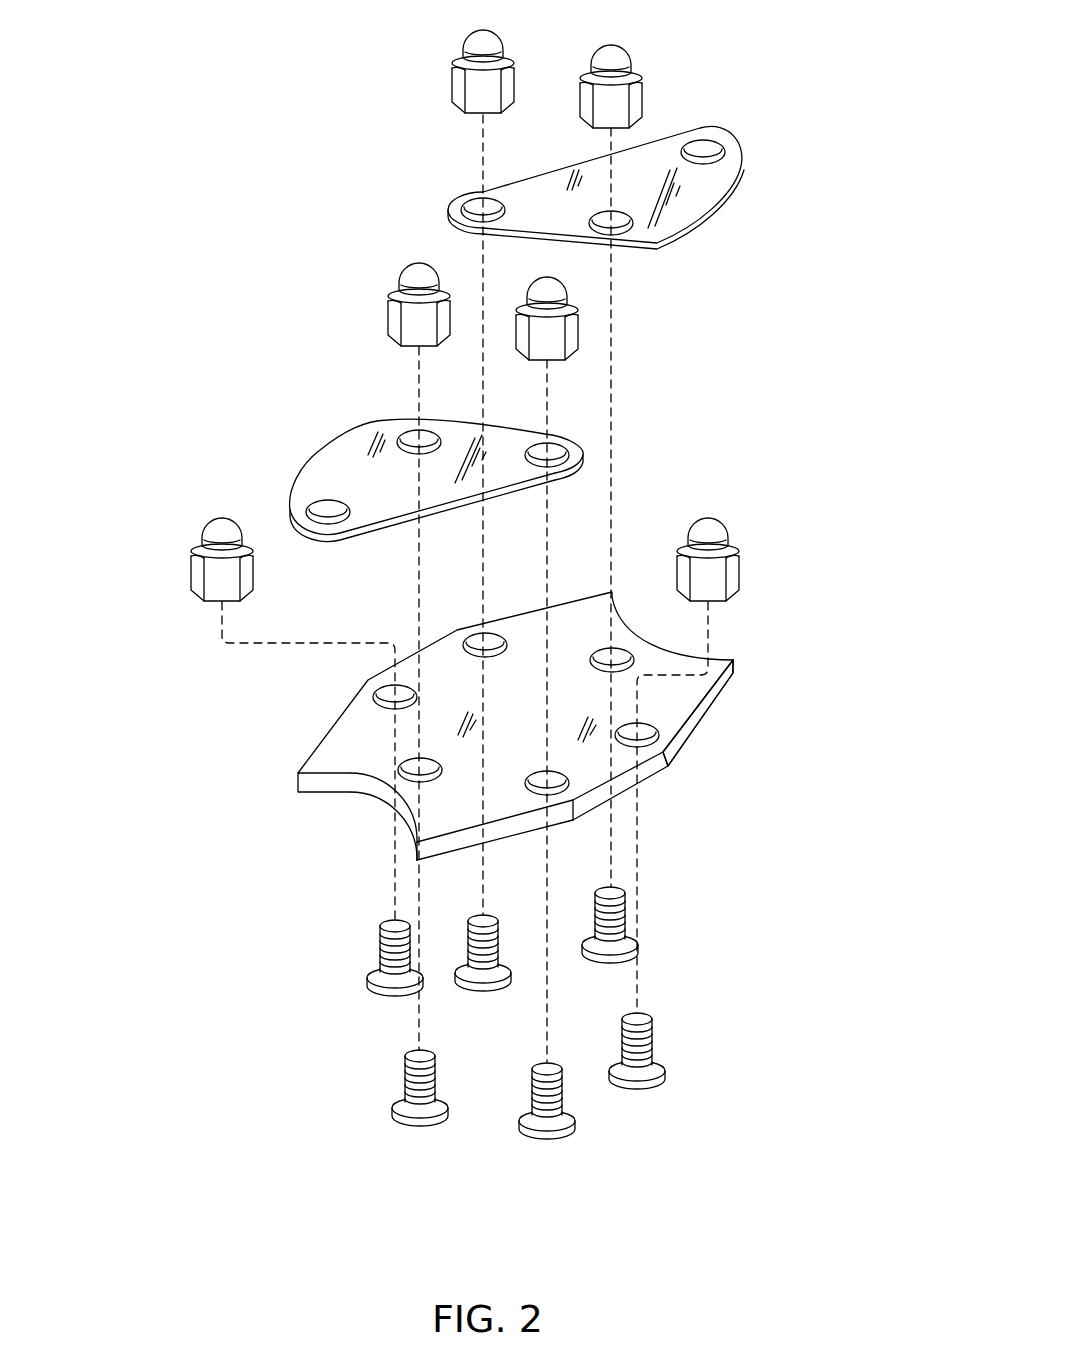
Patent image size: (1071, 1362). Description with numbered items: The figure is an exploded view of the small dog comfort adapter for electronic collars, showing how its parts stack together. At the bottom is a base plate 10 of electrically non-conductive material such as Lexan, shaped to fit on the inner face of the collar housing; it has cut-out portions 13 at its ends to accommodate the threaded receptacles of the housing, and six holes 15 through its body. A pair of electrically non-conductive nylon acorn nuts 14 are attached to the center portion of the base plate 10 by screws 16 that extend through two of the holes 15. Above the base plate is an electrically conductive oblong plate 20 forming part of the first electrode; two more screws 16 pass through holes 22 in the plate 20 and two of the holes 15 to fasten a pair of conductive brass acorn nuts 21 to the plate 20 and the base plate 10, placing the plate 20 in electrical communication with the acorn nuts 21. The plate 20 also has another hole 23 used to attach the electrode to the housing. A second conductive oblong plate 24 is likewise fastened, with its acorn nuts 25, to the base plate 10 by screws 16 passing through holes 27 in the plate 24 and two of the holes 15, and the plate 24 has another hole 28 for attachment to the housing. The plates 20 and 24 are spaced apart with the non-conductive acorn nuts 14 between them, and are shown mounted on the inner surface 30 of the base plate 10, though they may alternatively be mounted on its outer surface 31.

The base plate 10 is at (673, 758).
The cut-out portions 13 is at (387, 790).
The acorn nuts 14 is at (198, 543).
The holes 15 is at (378, 703).
The screws 16 is at (375, 960).
The plate 20 is at (730, 193).
The acorn nuts 21 is at (457, 62).
The holes 22 is at (462, 200).
The hole 23 is at (715, 140).
The plate 24 is at (318, 450).
The acorn nuts 25 is at (390, 305).
The holes 27 is at (410, 432).
The hole 28 is at (318, 500).
The inner surface 30 is at (608, 762).
The outer surface 31 is at (725, 693).